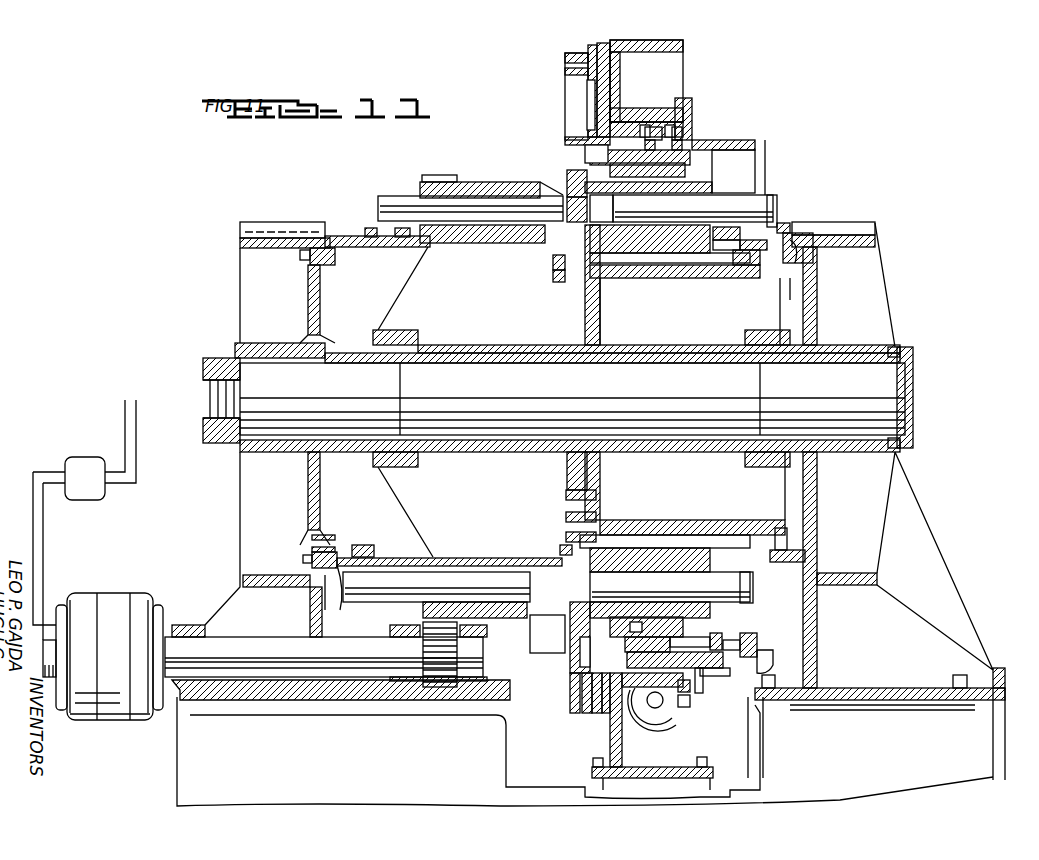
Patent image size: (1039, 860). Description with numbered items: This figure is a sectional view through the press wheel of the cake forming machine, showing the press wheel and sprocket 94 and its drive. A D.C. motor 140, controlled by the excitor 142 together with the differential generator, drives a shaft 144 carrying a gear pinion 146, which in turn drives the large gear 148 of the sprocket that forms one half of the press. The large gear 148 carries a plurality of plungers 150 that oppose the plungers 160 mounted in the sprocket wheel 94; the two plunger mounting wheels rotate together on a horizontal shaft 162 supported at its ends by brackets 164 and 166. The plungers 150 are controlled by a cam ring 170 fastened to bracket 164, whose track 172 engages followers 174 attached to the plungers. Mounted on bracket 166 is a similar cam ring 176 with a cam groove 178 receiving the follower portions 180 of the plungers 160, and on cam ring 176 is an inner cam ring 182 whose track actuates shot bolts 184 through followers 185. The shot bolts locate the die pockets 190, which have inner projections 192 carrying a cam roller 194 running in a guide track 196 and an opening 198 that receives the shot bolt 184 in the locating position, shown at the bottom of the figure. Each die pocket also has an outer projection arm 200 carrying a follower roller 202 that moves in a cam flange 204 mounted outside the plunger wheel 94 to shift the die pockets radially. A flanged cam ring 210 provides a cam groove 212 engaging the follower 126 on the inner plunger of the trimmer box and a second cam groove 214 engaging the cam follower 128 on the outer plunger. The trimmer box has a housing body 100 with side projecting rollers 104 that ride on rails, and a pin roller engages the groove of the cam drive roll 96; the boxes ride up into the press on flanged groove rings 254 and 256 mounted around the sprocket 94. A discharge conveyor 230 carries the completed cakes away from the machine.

The press wheel and sprocket 94 is at (663, 565).
The cam drive roll 96 is at (646, 720).
The housing body 100 is at (650, 624).
The side projecting rollers 104 is at (690, 710).
The follower 126 is at (733, 640).
The cam follower 128 is at (730, 678).
The D.C. motor 140 is at (158, 626).
The excitor 142 is at (99, 439).
The shaft 144 is at (264, 650).
The gear pinion 146 is at (445, 690).
The large gear 148 is at (518, 190).
The plungers 150 is at (470, 215).
The plungers 160 is at (765, 203).
The horizontal shaft 162 is at (456, 366).
The bracket 164 is at (257, 280).
The bracket 166 is at (880, 330).
The cam ring 170 is at (352, 247).
The track 172 is at (395, 248).
The followers 174 is at (395, 228).
The cam ring 176 is at (805, 265).
The cam groove 178 is at (778, 215).
The follower portions 180 is at (752, 227).
The inner cam ring 182 is at (780, 555).
The shot bolts 184 is at (650, 285).
The followers 185 is at (740, 252).
The die pockets 190 is at (565, 140).
The inner projections 192 is at (603, 216).
The cam roller 194 is at (557, 258).
The guide track 196 is at (558, 268).
The opening 198 is at (575, 200).
The outer projection arm 200 is at (570, 93).
The follower roller 202 is at (578, 58).
The cam flange 204 is at (617, 92).
The flanged cam ring 210 is at (750, 148).
The cam groove 212 is at (712, 148).
The second cam groove 214 is at (702, 695).
The discharge conveyor 230 is at (545, 625).
The flanged groove ring 254 is at (580, 722).
The flanged groove ring 256 is at (700, 650).